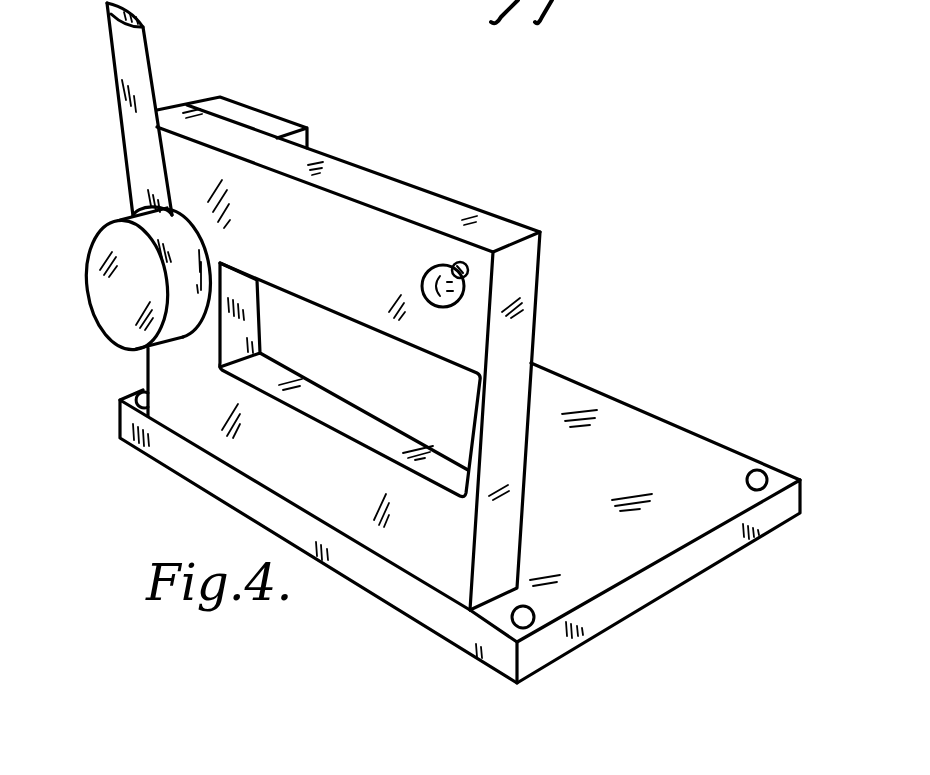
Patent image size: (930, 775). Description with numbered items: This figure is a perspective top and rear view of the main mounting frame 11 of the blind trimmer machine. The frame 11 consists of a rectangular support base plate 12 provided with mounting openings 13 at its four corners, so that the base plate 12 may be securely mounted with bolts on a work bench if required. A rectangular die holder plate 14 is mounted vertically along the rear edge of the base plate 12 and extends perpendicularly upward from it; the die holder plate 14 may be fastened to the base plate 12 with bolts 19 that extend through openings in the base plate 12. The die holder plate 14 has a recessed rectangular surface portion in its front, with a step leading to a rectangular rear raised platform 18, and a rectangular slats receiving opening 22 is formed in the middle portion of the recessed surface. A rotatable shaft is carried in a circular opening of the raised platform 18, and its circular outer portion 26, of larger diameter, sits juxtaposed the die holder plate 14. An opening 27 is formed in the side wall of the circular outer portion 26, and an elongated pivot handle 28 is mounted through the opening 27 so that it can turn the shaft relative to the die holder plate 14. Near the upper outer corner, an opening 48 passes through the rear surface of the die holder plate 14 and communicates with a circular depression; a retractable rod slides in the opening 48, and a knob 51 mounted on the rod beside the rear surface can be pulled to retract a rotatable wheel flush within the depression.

The main mounting frame 11 is at (548, 240).
The rectangular support base plate 12 is at (662, 438).
The mounting openings 13 is at (763, 473).
The rectangular die holder plate 14 is at (538, 325).
The rectangular rear raised platform 18 is at (270, 113).
The bolts 19 is at (372, 223).
The rectangular slats receiving opening 22 is at (457, 397).
The circular outer portion 26 is at (112, 290).
The opening 27 is at (137, 218).
The elongated pivot handle 28 is at (122, 72).
The opening 48 is at (463, 262).
The knob 51 is at (463, 292).